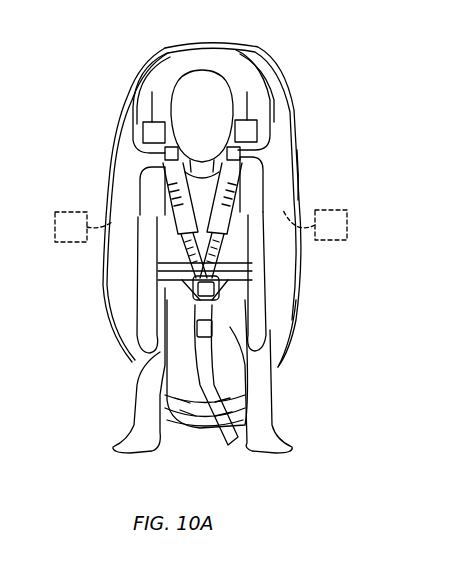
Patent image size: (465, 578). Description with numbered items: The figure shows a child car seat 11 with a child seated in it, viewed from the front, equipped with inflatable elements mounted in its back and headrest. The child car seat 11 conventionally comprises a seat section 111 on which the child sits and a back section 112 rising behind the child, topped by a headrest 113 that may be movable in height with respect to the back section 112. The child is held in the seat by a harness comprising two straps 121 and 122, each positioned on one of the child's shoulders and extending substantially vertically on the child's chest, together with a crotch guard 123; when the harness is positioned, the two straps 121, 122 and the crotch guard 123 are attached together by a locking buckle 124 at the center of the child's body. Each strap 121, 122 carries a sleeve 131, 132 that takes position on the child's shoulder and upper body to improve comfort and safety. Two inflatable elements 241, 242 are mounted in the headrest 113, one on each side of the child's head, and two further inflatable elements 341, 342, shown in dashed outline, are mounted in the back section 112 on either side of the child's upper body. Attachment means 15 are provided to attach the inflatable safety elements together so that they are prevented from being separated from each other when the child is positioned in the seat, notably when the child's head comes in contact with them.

The child car seat 11 is at (300, 105).
The seat section 111 is at (285, 323).
The back section 112 is at (282, 143).
The headrest 113 is at (242, 63).
The strap 121 is at (170, 257).
The strap 122 is at (236, 275).
The crotch guard 123 is at (270, 371).
The locking buckle 124 is at (175, 287).
The sleeve 131 is at (150, 168).
The sleeve 132 is at (243, 183).
The attachment means 15 is at (233, 268).
The inflatable element 241 is at (152, 110).
The inflatable element 242 is at (251, 118).
The inflatable element 341 is at (75, 212).
The inflatable element 342 is at (347, 225).